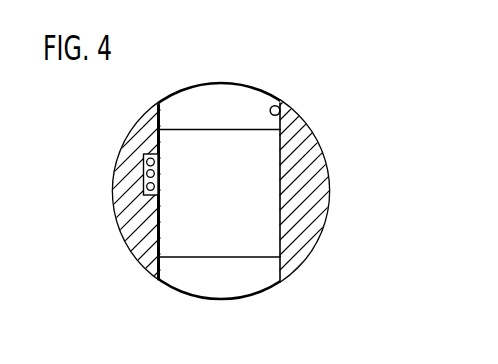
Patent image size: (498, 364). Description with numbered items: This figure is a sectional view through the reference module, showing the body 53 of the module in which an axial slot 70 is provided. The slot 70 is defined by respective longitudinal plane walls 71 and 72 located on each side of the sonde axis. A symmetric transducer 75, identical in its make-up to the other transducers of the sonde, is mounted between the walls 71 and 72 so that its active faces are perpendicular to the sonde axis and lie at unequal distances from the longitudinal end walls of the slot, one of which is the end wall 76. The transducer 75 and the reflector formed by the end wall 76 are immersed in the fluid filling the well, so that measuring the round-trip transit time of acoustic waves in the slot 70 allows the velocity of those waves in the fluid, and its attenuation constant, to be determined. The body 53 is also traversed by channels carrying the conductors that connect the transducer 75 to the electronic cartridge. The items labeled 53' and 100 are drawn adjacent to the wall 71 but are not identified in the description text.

The housing wall 53 is at (336, 178).
The housing wall plate 53' is at (109, 167).
The wall portion 70 is at (280, 282).
The wall member 71 is at (167, 108).
The hole 72 is at (279, 106).
The chamber 75 is at (220, 163).
The bottom wall 76 is at (175, 275).
The apertures 100 is at (143, 180).